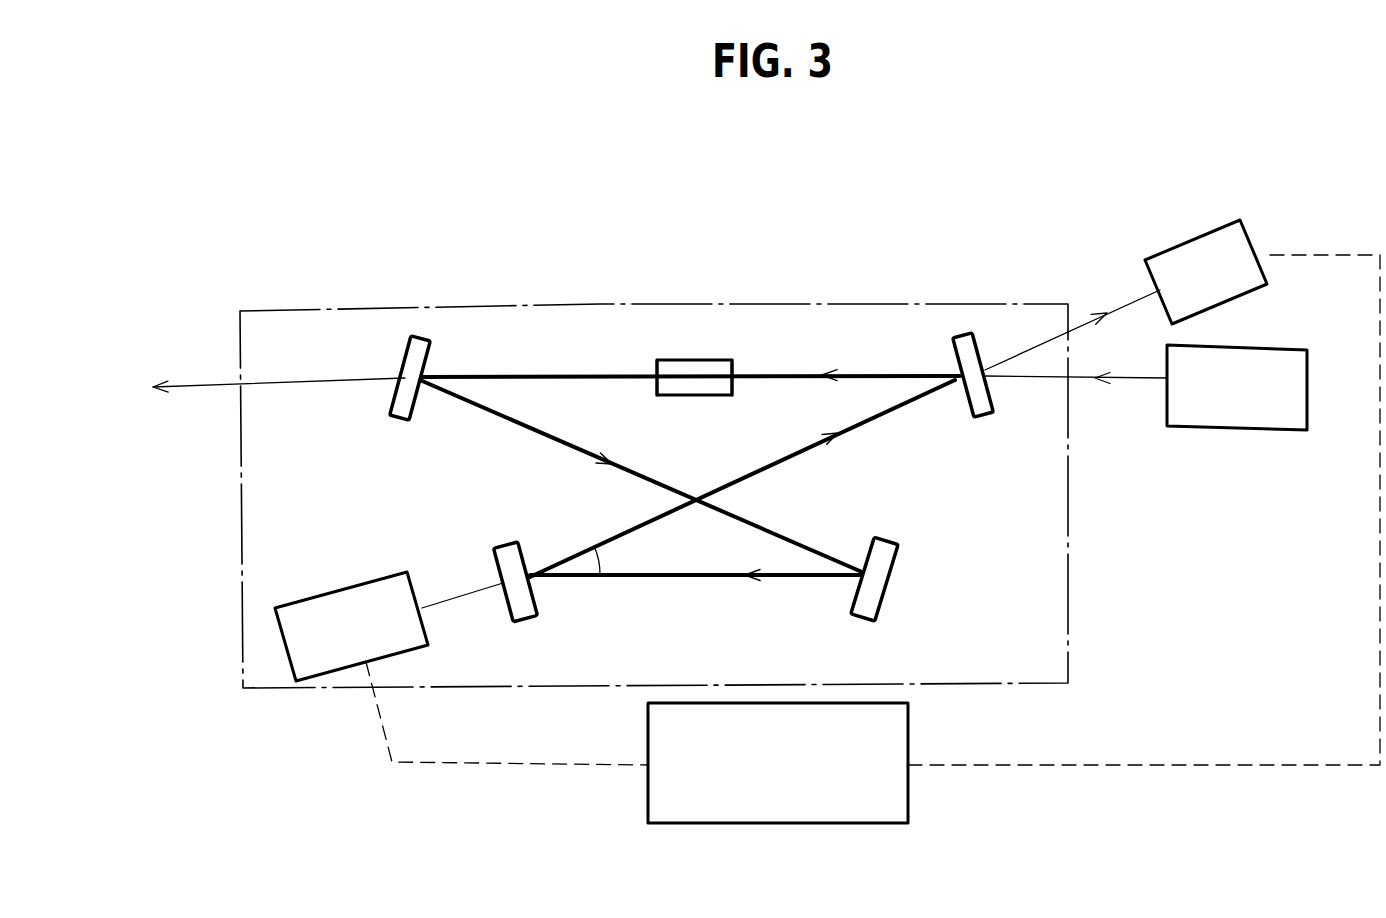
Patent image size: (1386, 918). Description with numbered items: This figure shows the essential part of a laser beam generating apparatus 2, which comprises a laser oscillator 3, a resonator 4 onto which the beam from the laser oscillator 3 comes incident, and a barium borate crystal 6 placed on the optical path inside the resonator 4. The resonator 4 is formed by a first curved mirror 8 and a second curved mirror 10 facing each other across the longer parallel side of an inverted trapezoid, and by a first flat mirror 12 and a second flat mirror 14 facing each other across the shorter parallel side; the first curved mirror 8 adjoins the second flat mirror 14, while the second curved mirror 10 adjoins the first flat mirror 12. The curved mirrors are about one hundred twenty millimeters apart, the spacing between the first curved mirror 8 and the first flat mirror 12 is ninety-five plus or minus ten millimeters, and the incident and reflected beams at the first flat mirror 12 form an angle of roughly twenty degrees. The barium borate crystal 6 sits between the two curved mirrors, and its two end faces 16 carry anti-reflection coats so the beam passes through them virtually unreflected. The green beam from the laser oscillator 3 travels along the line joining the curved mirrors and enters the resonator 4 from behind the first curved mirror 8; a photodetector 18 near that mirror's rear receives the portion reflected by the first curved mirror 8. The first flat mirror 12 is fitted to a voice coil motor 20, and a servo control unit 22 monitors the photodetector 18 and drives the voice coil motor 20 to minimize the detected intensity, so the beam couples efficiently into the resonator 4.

The laser beam generating apparatus 2 is at (400, 288).
The laser oscillator 3 is at (1243, 428).
The resonator 4 is at (933, 303).
The barium borate crystal 6 is at (667, 360).
The first curved mirror 8 is at (995, 395).
The second curved mirror 10 is at (403, 362).
The first flat mirror 12 is at (502, 540).
The second flat mirror 14 is at (895, 565).
The end faces 16 is at (657, 367).
The photodetector 18 is at (1190, 240).
The voice coil motor 20 is at (320, 596).
The servo control unit 22 is at (810, 823).